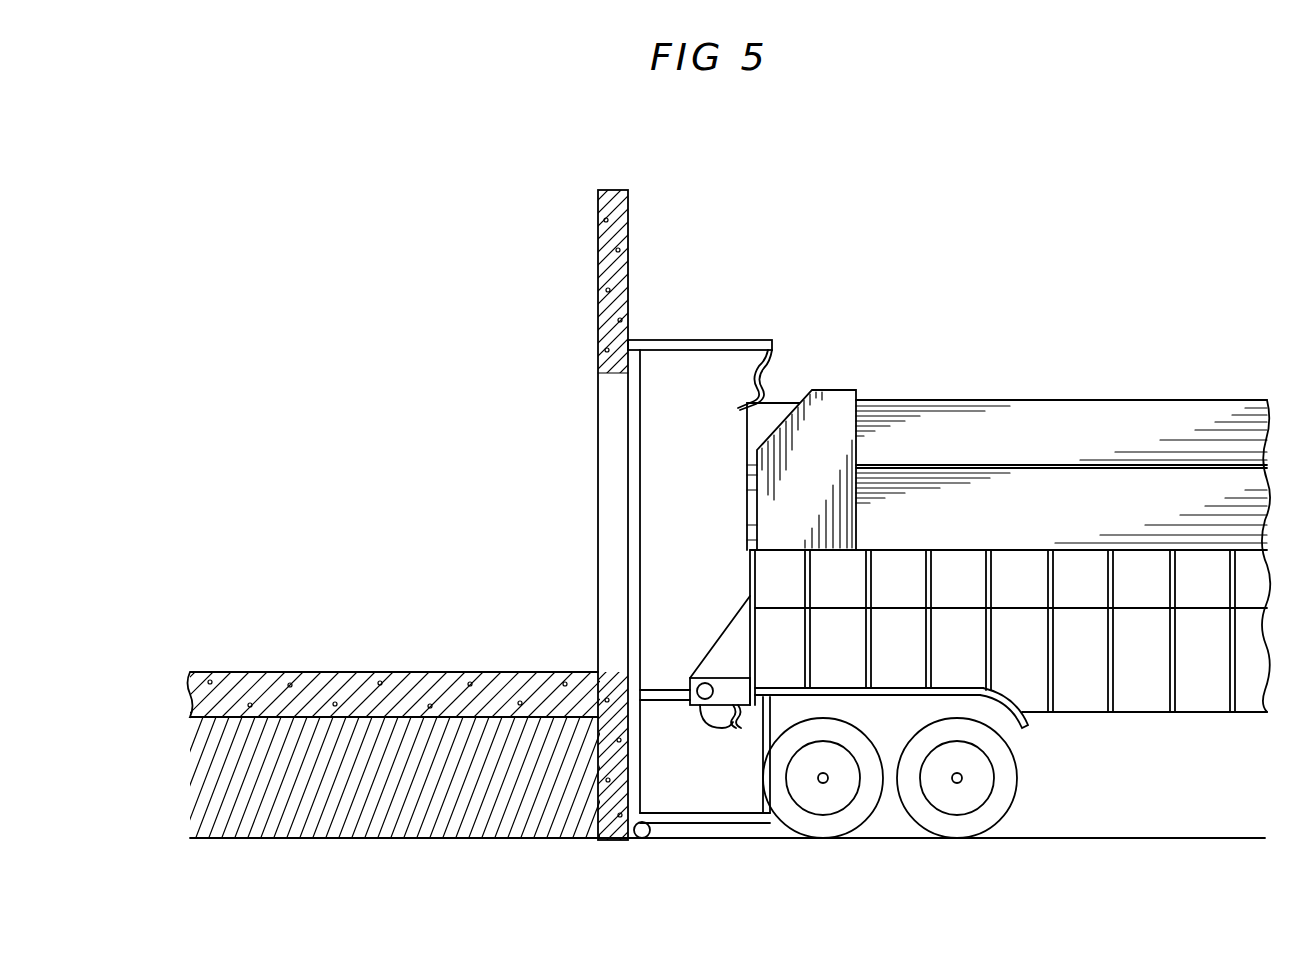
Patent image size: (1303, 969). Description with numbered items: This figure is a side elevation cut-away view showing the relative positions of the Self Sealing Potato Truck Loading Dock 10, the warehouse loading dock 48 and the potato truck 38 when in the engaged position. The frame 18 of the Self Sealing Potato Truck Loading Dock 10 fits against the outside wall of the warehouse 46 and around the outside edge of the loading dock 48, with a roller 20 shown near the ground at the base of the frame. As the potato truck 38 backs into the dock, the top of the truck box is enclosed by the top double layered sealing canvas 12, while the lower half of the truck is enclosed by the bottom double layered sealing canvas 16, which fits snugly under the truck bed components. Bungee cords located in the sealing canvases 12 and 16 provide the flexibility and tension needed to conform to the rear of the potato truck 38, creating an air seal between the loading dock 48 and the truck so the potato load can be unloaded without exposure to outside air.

The Self Sealing Potato Truck Loading Dock 10 is at (753, 332).
The top double layered sealing canvas 12 is at (768, 363).
The bottom double layered sealing canvas 16 is at (739, 730).
The frame 18 is at (698, 348).
The roller 20 is at (634, 836).
The potato truck 38 is at (1080, 512).
The warehouse 46 is at (594, 292).
The loading dock 48 is at (615, 670).